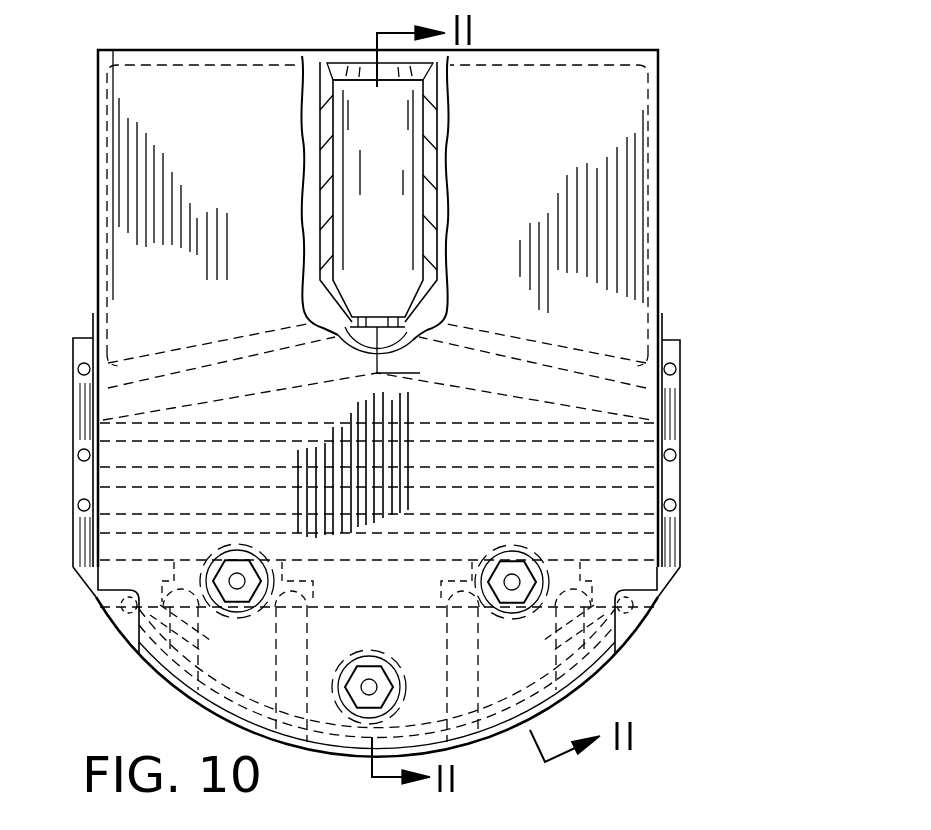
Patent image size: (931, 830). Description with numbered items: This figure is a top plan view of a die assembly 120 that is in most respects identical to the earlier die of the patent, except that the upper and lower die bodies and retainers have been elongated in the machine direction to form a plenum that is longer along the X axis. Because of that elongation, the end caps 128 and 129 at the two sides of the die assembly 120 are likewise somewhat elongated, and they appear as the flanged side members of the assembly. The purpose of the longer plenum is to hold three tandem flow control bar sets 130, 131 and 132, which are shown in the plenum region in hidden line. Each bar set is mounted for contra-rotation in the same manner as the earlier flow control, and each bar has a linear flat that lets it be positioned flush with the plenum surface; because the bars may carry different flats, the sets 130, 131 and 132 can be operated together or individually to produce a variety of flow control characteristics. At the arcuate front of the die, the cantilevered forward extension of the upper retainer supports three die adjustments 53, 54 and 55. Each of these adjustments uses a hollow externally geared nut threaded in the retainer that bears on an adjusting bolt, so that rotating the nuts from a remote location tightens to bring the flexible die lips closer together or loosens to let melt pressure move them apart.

The die assembly 120 is at (684, 178).
The end cap 128 is at (84, 405).
The end cap 129 is at (678, 477).
The flow control bar set 130 is at (73, 548).
The flow control bar set 131 is at (652, 532).
The flow control bar set 132 is at (657, 428).
The die adjustment 53 is at (237, 605).
The die adjustment 54 is at (340, 706).
The die adjustment 55 is at (520, 612).